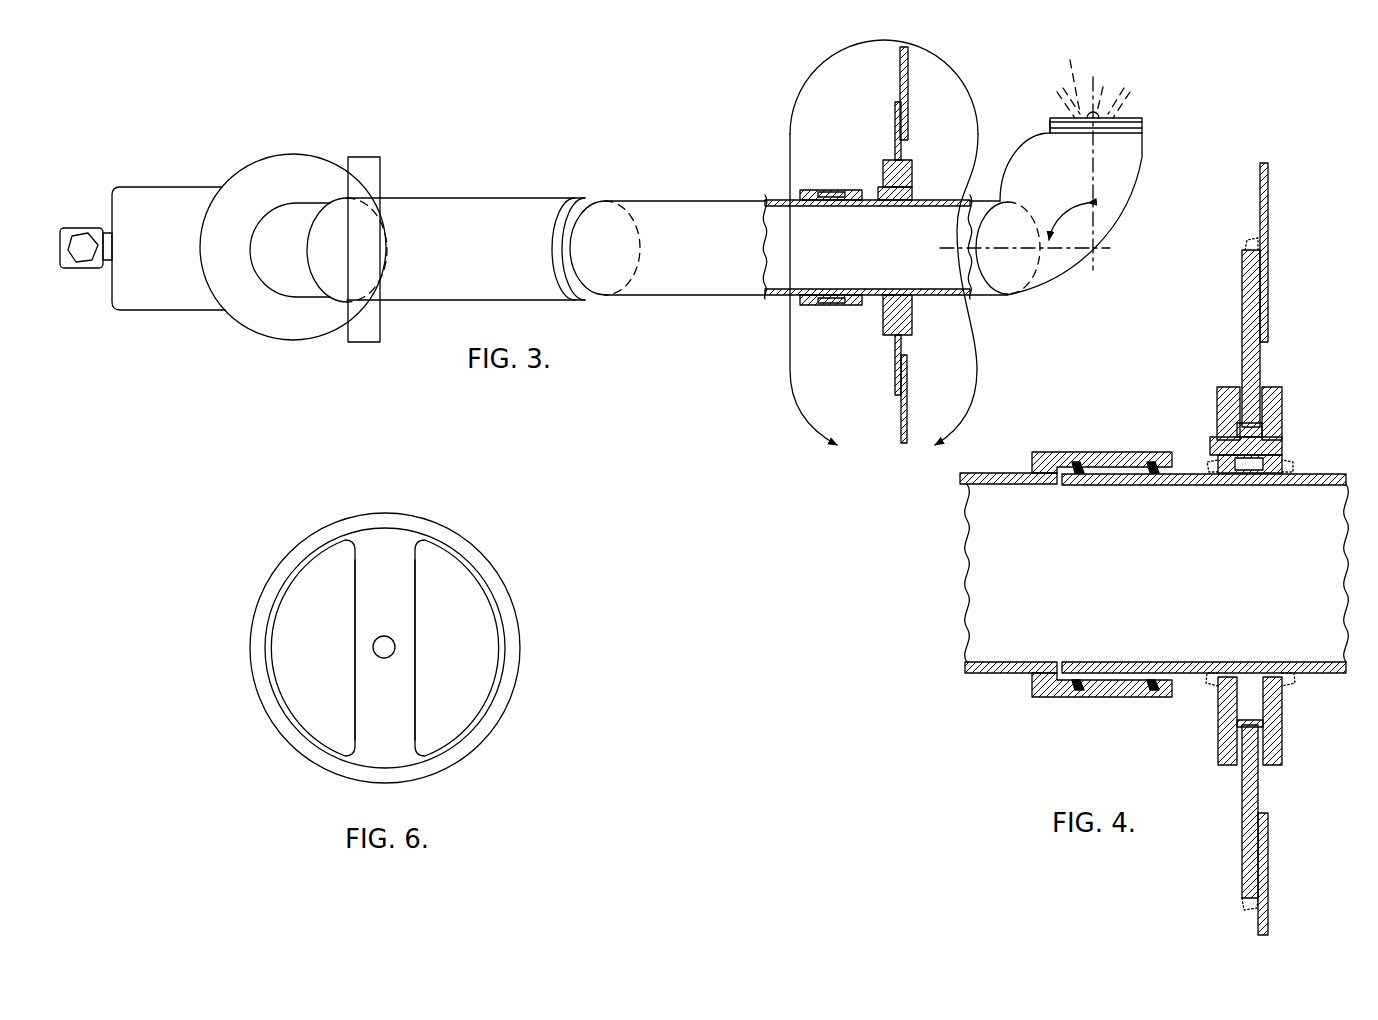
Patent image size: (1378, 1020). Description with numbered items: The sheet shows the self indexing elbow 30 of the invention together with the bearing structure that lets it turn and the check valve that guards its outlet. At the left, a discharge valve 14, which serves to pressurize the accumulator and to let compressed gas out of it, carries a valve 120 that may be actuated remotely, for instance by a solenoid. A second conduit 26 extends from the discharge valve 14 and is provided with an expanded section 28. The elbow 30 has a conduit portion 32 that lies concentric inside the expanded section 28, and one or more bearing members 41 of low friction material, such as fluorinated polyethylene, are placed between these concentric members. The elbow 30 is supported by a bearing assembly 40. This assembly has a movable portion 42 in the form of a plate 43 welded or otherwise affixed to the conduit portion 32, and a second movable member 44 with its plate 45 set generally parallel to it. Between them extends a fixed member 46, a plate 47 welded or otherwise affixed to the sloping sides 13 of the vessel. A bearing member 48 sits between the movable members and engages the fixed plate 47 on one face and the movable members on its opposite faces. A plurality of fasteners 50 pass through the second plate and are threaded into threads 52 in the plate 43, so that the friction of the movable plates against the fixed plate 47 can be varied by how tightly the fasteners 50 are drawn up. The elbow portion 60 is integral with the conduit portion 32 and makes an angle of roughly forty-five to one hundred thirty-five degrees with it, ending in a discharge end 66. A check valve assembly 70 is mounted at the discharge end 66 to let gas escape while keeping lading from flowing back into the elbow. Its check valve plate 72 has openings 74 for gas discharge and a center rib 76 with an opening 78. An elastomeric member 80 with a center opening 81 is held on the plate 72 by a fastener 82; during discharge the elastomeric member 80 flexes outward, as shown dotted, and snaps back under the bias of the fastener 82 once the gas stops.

In FIG. 4, the sloping sides 13 is at (1270, 198).
In FIG. 3, the discharge valve 14 is at (180, 185).
In FIG. 3, the second conduit 26 is at (718, 296).
In FIG. 4, the second conduit 26 is at (978, 680).
In FIG. 3, the expanded section 28 is at (837, 302).
In FIG. 4, the expanded section 28 is at (1077, 426).
In FIG. 3, the self indexing elbow 30 is at (1124, 224).
In FIG. 3, the conduit portion 32 is at (978, 200).
In FIG. 4, the conduit portion 32 is at (1185, 675).
In FIG. 3, the bearing assembly 40 is at (852, 136).
In FIG. 4, the bearing member 41 is at (1078, 690).
In FIG. 4, the movable portion 42 is at (1287, 396).
In FIG. 4, the plate 43 is at (1272, 386).
In FIG. 4, the second movable member 44 is at (1212, 408).
In FIG. 4, the plate 45 is at (1226, 386).
In FIG. 4, the fixed member 46 is at (1240, 331).
In FIG. 4, the plate 47 is at (1242, 291).
In FIG. 4, the bearing member 48 is at (1258, 422).
In FIG. 4, the fasteners 50 is at (1210, 445).
In FIG. 4, the threads 52 is at (1265, 451).
In FIG. 3, the elbow portion 60 is at (1142, 157).
In FIG. 3, the discharge end 66 is at (1142, 131).
In FIG. 3, the check valve assembly 70 is at (1163, 102).
In FIG. 3, the check valve plate 72 is at (1050, 120).
In FIG. 6, the check valve plate 72 is at (436, 509).
In FIG. 6, the openings 74 is at (337, 614).
In FIG. 6, the center rib 76 is at (355, 681).
In FIG. 6, the opening 78 is at (394, 651).
In FIG. 3, the elastomeric member 80 is at (1050, 92).
In FIG. 3, the center opening 81 is at (1065, 77).
In FIG. 3, the fastener 82 is at (1104, 87).
In FIG. 3, the valve 120 is at (100, 230).